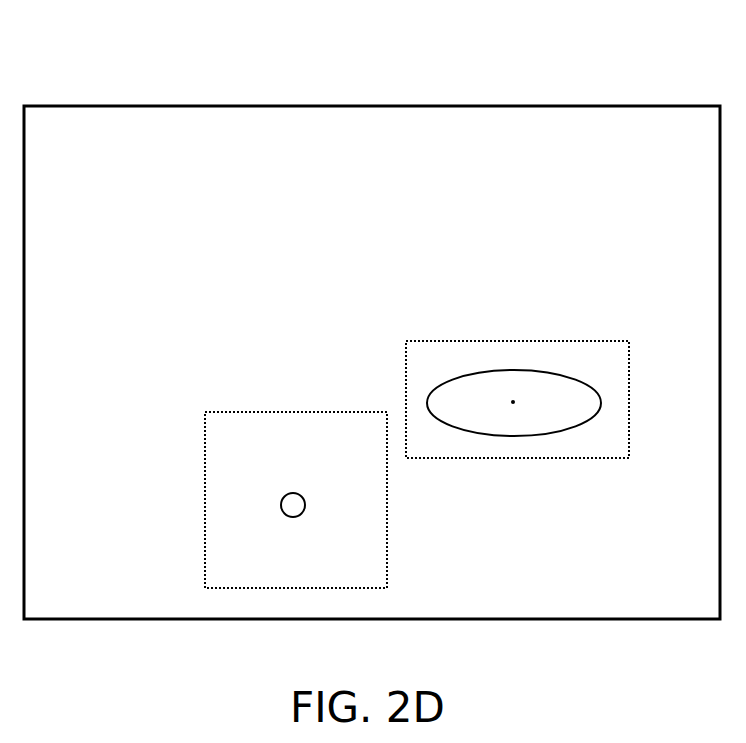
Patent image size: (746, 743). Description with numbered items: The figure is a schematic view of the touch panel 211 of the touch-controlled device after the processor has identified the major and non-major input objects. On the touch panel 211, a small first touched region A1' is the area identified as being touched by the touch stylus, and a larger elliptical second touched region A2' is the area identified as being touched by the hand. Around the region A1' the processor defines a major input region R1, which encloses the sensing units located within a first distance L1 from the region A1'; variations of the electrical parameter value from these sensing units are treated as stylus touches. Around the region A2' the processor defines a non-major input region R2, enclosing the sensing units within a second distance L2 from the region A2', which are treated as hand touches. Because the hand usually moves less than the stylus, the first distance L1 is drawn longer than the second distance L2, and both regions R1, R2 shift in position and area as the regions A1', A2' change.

The touch panel 211 is at (300, 106).
The major input region R1 is at (247, 412).
The non-major input region R2 is at (572, 341).
The first distance L1 is at (293, 412).
The second distance L2 is at (512, 341).
The first touched region A1' is at (267, 527).
The second touched region A2' is at (514, 423).